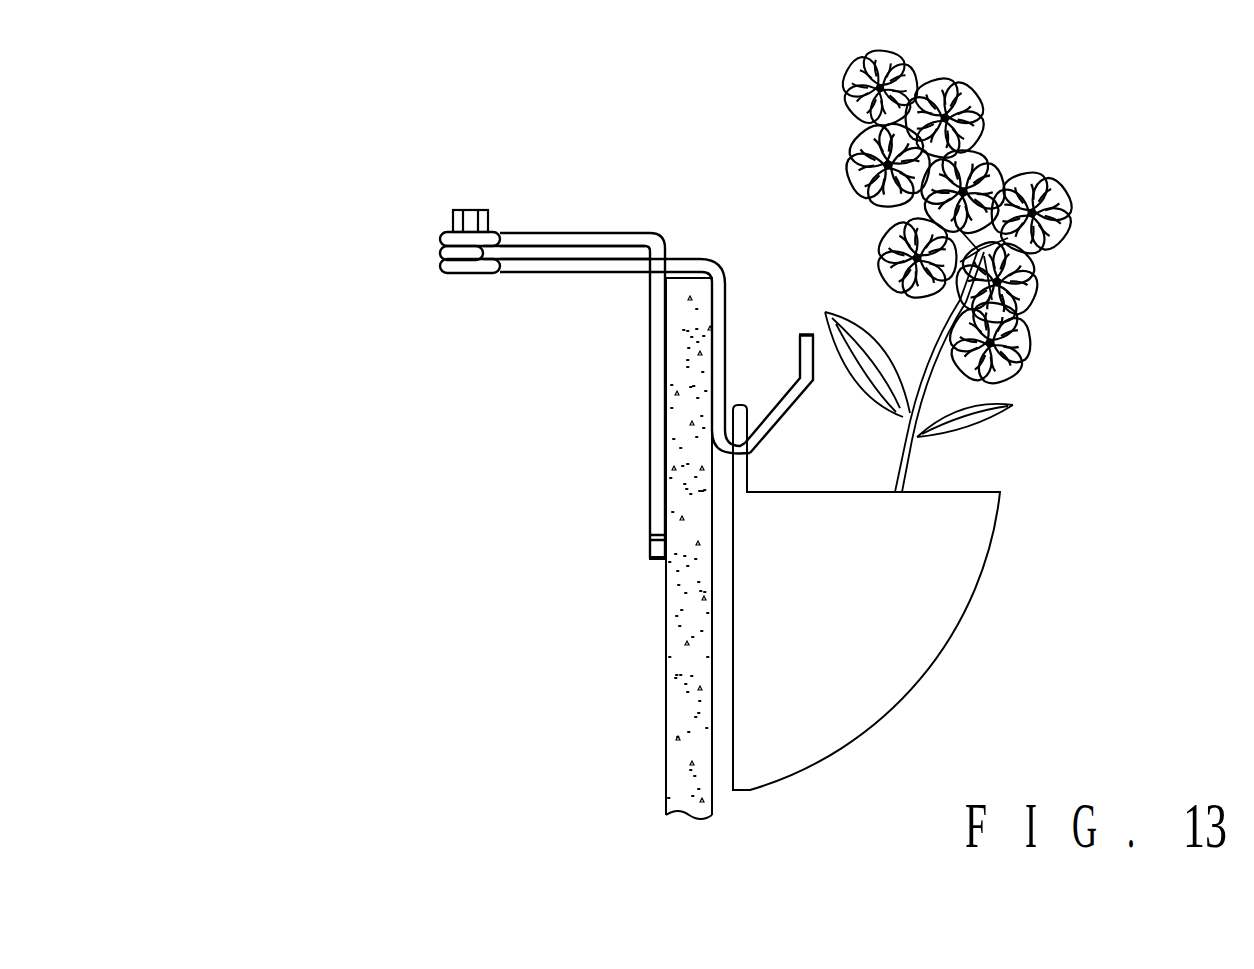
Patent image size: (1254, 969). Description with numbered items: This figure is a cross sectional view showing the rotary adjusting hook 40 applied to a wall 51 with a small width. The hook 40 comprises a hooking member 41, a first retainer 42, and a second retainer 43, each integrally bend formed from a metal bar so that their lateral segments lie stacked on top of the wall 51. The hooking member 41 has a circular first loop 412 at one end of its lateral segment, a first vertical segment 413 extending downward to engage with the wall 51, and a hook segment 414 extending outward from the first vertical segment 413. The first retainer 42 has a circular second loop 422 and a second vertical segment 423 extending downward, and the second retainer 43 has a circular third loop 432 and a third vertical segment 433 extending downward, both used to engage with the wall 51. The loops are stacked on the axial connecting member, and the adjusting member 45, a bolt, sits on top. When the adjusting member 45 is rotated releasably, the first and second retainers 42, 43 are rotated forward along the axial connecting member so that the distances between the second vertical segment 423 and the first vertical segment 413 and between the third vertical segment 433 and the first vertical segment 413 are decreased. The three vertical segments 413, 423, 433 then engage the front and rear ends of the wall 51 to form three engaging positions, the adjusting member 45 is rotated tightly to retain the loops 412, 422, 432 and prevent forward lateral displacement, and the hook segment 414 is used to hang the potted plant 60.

The rotary adjusting hook 40 is at (578, 296).
The hooking member 41 is at (590, 319).
The first retainer 42 is at (485, 196).
The second retainer 43 is at (503, 331).
The adjusting member 45 is at (473, 210).
The first loop 412 is at (453, 265).
The first vertical segment 413 is at (717, 318).
The hook segment 414 is at (780, 405).
The second loop 422 is at (450, 256).
The third loop 432 is at (445, 239).
The second vertical segment 423 is at (658, 413).
The third vertical segment 433 is at (602, 419).
The wall 51 is at (683, 663).
The potted plant 60 is at (945, 567).